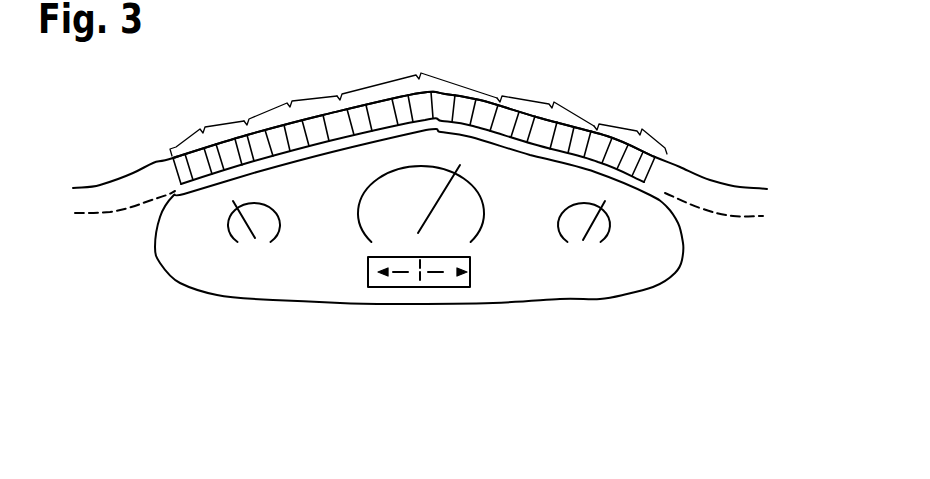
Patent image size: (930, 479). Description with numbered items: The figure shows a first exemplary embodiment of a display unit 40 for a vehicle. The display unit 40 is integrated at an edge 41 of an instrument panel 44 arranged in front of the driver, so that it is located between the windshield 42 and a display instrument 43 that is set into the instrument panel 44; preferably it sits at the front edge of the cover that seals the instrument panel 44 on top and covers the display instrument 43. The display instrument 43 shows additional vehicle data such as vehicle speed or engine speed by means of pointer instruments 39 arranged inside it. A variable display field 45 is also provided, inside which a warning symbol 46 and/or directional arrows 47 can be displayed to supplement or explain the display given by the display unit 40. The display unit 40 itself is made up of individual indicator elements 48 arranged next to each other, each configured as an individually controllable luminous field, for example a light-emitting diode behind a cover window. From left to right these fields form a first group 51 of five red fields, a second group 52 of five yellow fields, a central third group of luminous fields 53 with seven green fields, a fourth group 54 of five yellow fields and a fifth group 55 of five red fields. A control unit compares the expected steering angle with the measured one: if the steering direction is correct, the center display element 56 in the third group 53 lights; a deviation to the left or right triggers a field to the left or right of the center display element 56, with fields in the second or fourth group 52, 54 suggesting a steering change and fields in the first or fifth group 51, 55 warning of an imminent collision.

The pointer instruments 39 is at (274, 233).
The display unit 40 is at (667, 153).
The edge of instrument panel 41 is at (767, 203).
The windshield 42 is at (472, 60).
The display instrument 43 is at (618, 294).
The instrument panel 44 is at (479, 230).
The variable display field 45 is at (445, 287).
The warning symbol 46 is at (413, 277).
The directional arrows 47 is at (385, 272).
The indicator elements 48 is at (193, 153).
The first group 51 is at (206, 127).
The second group 52 is at (290, 102).
The third group of luminous fields 53 is at (418, 75).
The fourth group 54 is at (552, 107).
The fifth group 55 is at (640, 128).
The center display element 56 is at (392, 100).